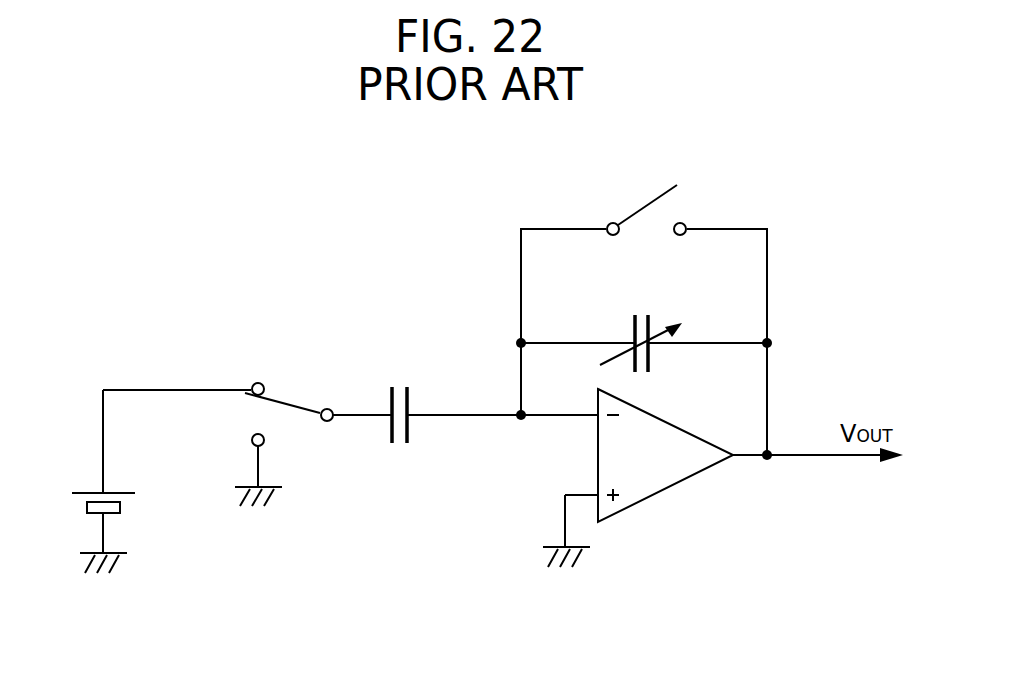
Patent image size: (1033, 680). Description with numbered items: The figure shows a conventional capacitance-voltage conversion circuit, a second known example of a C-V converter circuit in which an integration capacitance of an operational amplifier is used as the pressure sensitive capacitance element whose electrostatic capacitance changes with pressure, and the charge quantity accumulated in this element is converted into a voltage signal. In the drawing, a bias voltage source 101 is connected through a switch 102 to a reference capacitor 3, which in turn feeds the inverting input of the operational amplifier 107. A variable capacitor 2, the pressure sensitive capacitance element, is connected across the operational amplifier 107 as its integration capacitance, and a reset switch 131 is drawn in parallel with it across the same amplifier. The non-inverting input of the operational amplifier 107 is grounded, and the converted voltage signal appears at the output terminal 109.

The bias voltage source 101 is at (92, 492).
The switch 102 is at (280, 403).
The reference capacitor CR 3 is at (408, 400).
The reset switch 131 is at (650, 205).
The variable sensor capacitor CS 2 is at (652, 357).
The operational amplifier 107 is at (673, 487).
The output terminal 109 is at (885, 460).